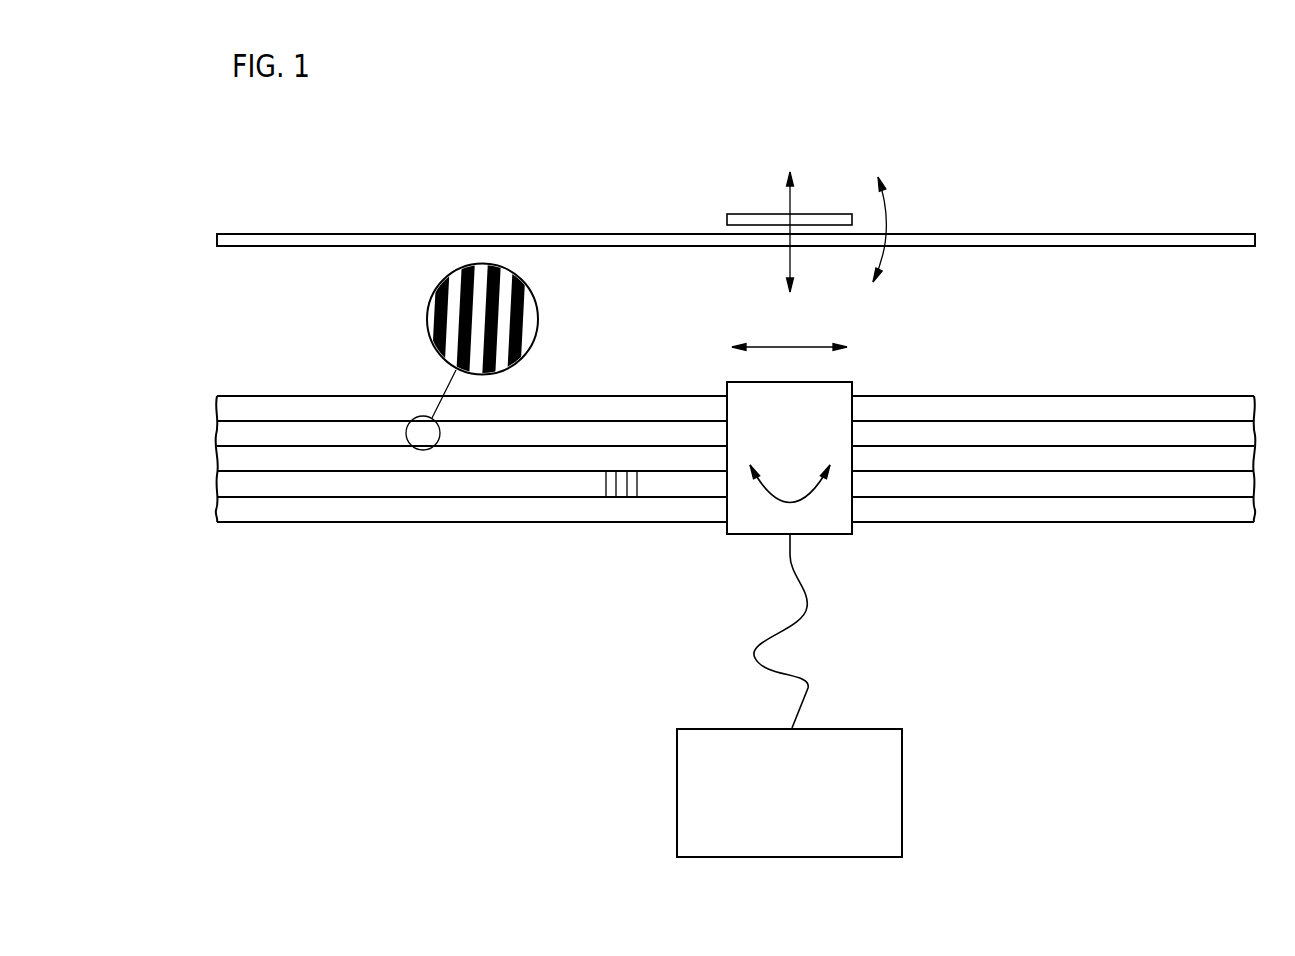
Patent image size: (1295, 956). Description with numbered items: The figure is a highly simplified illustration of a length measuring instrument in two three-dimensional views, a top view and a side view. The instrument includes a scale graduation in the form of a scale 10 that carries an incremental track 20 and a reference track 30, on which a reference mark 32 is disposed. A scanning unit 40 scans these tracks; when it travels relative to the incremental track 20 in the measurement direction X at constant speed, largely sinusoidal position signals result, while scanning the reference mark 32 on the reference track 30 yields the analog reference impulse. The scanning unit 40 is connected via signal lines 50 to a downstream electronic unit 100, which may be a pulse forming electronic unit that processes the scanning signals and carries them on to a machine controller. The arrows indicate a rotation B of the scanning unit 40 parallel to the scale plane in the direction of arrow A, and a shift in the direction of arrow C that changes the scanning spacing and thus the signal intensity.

The scale 10 is at (1212, 246).
The incremental track 20 is at (1102, 420).
The reference track 30 is at (438, 498).
The reference mark 32 is at (627, 498).
The scanning unit 40 is at (752, 214).
The signal lines 50 is at (808, 688).
The downstream electronic unit 100 is at (902, 788).